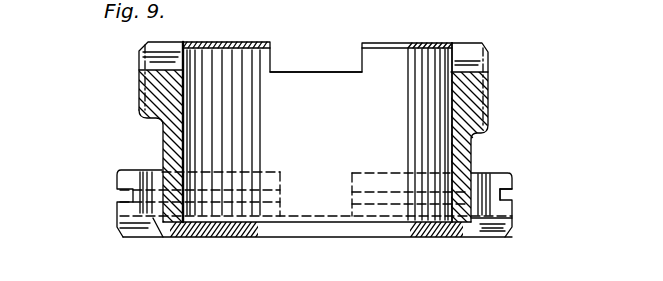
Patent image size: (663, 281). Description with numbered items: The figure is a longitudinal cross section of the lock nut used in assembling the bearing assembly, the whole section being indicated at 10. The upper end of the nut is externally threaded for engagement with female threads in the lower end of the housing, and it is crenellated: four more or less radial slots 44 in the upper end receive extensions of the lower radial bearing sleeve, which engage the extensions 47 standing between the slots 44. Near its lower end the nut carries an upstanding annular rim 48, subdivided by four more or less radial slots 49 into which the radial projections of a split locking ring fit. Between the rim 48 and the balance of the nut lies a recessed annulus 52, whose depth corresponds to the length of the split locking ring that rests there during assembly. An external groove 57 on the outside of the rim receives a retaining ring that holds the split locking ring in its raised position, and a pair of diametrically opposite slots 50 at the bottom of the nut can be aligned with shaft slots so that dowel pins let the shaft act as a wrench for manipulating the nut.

The coupling assembly 10 is at (417, 253).
The radial slots 44 is at (348, 50).
The extensions 47 is at (238, 42).
The upstanding annular rim 48 is at (512, 188).
The radial slots 49 is at (352, 192).
The slots 50 is at (508, 229).
The recessed annulus 52 is at (161, 170).
The external groove 57 is at (510, 201).